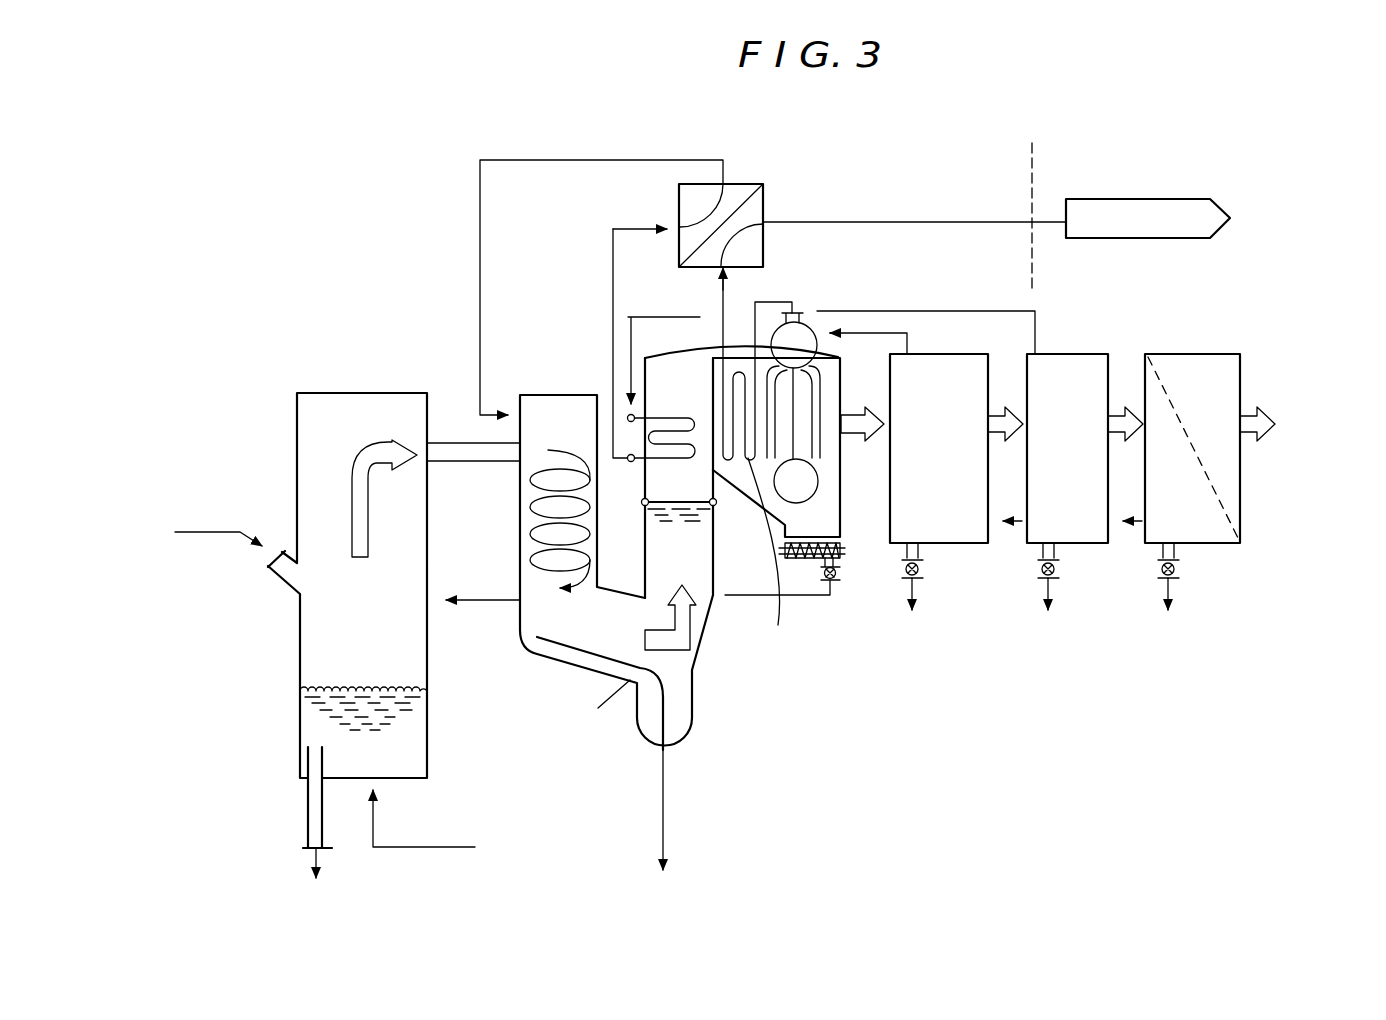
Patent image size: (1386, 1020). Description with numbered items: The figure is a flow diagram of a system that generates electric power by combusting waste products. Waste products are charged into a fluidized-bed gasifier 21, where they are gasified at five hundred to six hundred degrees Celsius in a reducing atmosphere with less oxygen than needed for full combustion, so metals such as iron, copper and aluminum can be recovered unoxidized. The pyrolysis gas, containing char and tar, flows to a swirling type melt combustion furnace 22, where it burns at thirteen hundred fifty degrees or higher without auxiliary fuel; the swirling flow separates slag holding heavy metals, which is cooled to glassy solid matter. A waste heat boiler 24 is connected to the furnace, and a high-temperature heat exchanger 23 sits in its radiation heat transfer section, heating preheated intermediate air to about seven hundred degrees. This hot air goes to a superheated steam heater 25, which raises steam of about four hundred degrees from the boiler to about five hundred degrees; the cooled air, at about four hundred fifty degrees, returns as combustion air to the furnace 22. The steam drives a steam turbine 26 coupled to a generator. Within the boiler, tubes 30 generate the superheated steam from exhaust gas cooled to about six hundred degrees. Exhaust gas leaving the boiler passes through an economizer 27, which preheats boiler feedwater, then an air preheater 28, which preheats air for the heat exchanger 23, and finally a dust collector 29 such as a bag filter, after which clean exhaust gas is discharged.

The fluidized-bed gasifier 21 is at (297, 458).
The swirling type melt combustion furnace 22 is at (520, 580).
The high-temperature heat exchanger 23 is at (660, 408).
The waste heat boiler 24 is at (843, 513).
The superheated steam heater 25 is at (740, 182).
The steam turbine 26 is at (1145, 238).
The economizer 27 is at (957, 545).
The air preheater 28 is at (1092, 545).
The dust collector 29 is at (1218, 541).
The tubes 30 is at (682, 633).